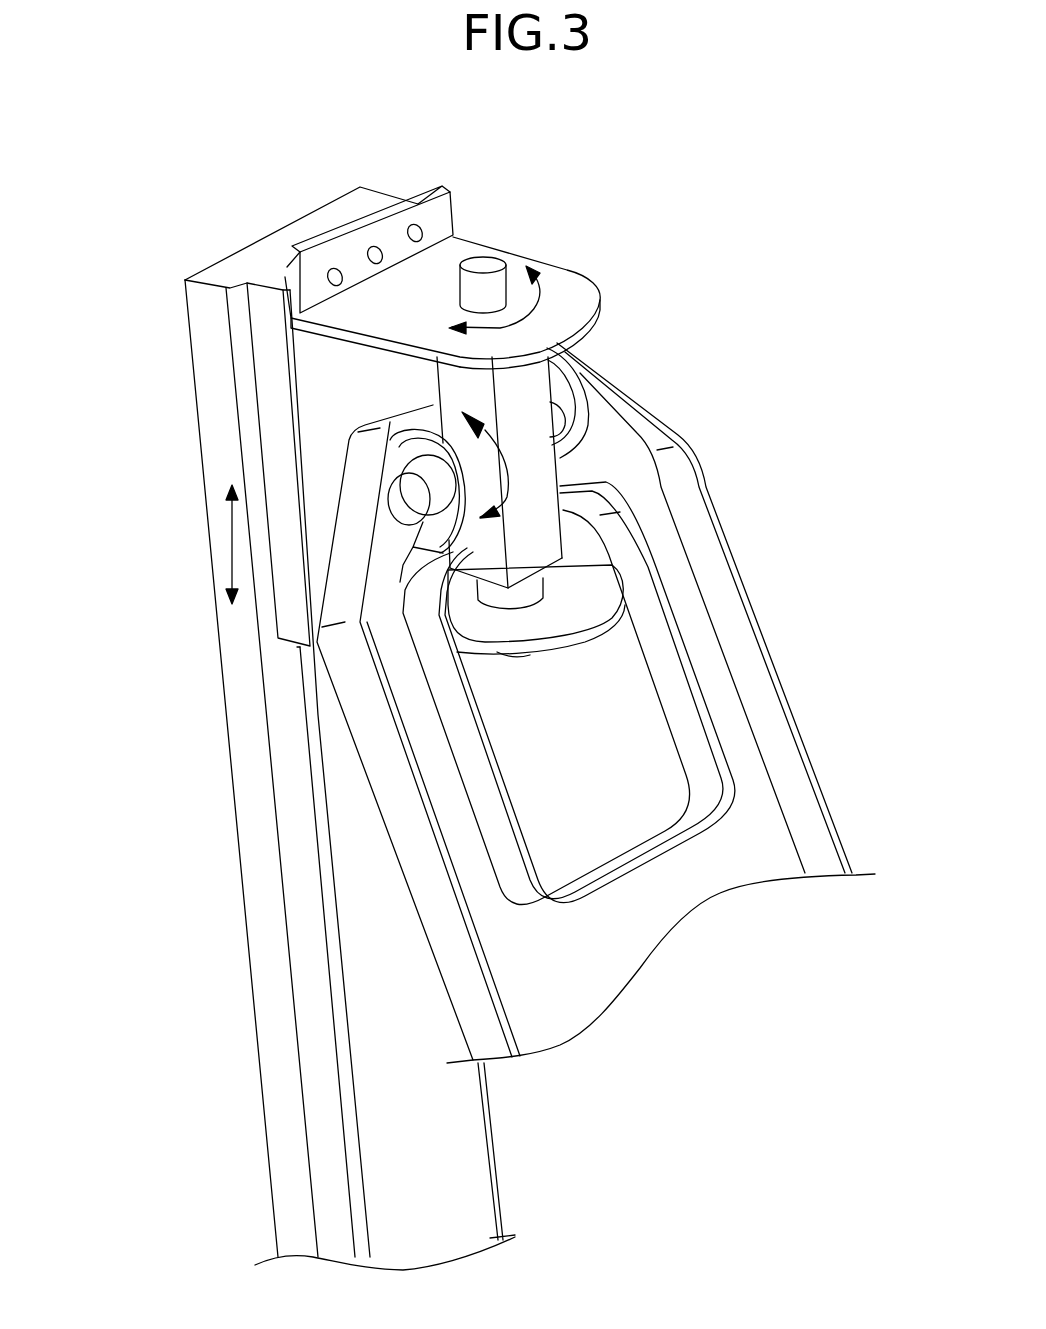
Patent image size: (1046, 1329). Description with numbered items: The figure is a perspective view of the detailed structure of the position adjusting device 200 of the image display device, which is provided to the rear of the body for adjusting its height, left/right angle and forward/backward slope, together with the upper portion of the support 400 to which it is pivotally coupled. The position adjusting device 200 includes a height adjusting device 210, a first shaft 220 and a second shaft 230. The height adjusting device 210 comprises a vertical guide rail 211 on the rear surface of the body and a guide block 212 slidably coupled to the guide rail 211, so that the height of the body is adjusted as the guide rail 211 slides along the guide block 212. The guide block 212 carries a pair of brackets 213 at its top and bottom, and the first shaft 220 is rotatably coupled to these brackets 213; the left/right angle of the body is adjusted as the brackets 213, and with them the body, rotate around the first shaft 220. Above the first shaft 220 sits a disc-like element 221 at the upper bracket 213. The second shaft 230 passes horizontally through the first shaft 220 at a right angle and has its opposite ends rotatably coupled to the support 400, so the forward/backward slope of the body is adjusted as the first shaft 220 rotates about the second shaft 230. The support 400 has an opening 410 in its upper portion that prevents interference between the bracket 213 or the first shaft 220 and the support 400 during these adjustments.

The position adjusting device 200 is at (557, 389).
The height adjusting device 210 is at (185, 707).
The guide rail 211 is at (207, 372).
The guide block 212 is at (268, 455).
The bracket 213 is at (457, 238).
The first shaft 220 is at (527, 380).
The rotary disc 221 is at (560, 283).
The second shaft 230 is at (560, 428).
The support 400 is at (822, 782).
The opening 410 is at (608, 763).